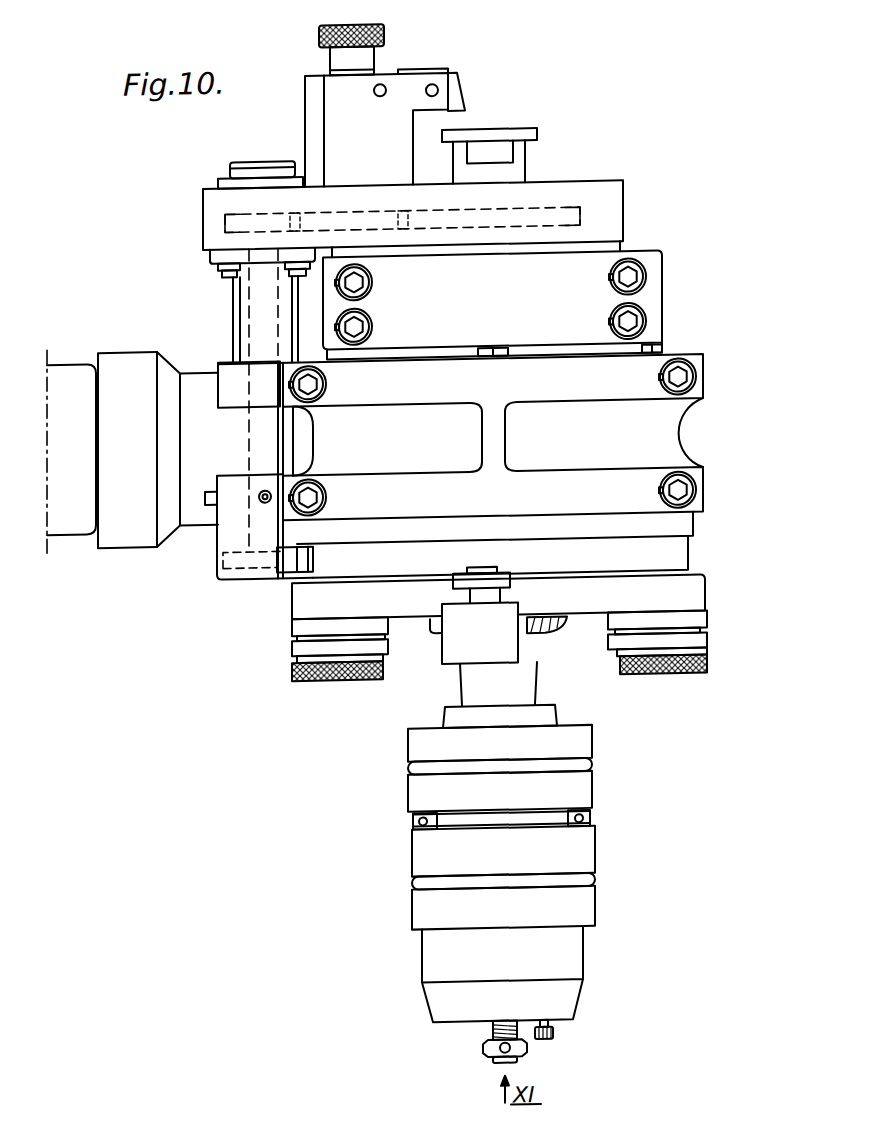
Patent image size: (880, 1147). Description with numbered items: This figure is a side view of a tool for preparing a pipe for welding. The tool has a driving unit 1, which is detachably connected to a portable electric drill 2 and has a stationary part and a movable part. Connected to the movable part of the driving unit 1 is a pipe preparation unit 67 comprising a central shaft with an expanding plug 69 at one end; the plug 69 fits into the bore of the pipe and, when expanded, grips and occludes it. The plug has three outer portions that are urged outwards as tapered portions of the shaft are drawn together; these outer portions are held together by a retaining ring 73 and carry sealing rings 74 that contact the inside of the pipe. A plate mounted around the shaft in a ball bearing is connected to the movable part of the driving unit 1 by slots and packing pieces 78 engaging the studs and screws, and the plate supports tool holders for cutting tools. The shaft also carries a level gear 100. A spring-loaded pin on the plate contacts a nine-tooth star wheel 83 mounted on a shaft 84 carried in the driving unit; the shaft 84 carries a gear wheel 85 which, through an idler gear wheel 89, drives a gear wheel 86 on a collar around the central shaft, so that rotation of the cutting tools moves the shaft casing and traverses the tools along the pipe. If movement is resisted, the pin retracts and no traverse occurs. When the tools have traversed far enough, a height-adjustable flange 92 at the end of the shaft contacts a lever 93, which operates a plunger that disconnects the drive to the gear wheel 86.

The driving unit 1 is at (705, 357).
The portable electric drill 2 is at (73, 456).
The pipe preparation unit 67 is at (668, 686).
The expanding plug 69 is at (599, 845).
The retaining ring 73 is at (413, 820).
The sealing rings 74 is at (423, 769).
The packing pieces 78 is at (690, 635).
The star wheel 83 is at (223, 552).
The shaft 84 is at (262, 440).
The gear wheel 85 is at (224, 207).
The gear wheel 86 is at (624, 208).
The idler gear wheel 89 is at (350, 207).
The flange 92 is at (537, 134).
The lever 93 is at (458, 80).
The level gear 100 is at (558, 636).